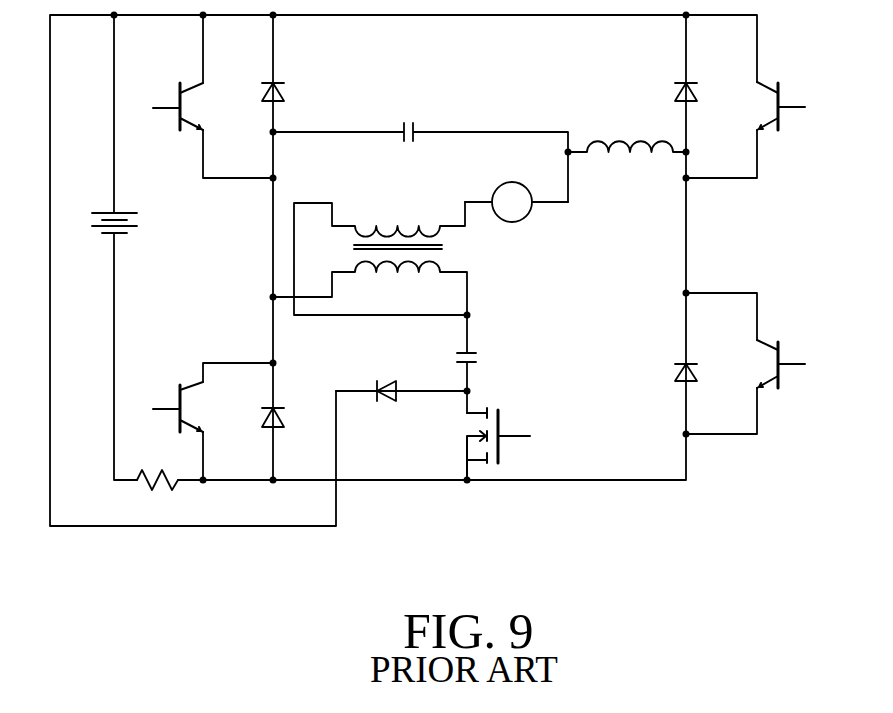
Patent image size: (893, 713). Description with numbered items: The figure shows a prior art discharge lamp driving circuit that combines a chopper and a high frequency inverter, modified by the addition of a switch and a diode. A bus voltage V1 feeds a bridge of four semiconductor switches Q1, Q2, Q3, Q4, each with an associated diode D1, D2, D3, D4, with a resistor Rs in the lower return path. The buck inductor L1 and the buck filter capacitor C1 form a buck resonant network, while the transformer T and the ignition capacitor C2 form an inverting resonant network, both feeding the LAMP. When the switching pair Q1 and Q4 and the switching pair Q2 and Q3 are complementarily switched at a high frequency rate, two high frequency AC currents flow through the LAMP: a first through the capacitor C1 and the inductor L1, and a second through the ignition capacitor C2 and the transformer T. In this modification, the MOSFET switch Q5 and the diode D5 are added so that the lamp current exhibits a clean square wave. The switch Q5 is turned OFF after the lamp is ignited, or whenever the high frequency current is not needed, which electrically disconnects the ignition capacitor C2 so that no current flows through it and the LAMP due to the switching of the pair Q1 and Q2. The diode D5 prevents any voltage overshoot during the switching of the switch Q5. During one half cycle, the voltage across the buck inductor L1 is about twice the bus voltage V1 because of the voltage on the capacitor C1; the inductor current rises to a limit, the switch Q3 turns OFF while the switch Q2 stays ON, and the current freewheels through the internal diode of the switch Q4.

The bus voltage V1 is at (129, 213).
The switch Q1 is at (178, 87).
The diode D1 is at (254, 88).
The switch Q2 is at (178, 389).
The diode D2 is at (254, 422).
The sense resistor Rs is at (157, 463).
The buck filter capacitor C1 is at (420, 143).
The transformer T is at (370, 264).
The lamp LAMP is at (516, 219).
The buck inductor L1 is at (627, 131).
The diode D3 is at (665, 88).
The switch Q3 is at (781, 89).
The switch Q4 is at (781, 348).
The diode D4 is at (665, 376).
The ignition capacitor C2 is at (447, 377).
The diode D5 is at (401, 410).
The switch Q5 is at (505, 438).